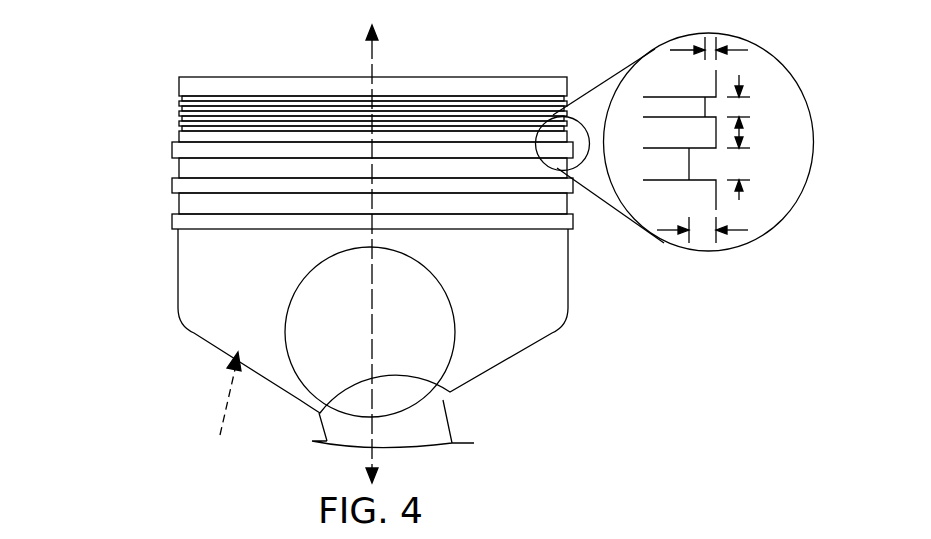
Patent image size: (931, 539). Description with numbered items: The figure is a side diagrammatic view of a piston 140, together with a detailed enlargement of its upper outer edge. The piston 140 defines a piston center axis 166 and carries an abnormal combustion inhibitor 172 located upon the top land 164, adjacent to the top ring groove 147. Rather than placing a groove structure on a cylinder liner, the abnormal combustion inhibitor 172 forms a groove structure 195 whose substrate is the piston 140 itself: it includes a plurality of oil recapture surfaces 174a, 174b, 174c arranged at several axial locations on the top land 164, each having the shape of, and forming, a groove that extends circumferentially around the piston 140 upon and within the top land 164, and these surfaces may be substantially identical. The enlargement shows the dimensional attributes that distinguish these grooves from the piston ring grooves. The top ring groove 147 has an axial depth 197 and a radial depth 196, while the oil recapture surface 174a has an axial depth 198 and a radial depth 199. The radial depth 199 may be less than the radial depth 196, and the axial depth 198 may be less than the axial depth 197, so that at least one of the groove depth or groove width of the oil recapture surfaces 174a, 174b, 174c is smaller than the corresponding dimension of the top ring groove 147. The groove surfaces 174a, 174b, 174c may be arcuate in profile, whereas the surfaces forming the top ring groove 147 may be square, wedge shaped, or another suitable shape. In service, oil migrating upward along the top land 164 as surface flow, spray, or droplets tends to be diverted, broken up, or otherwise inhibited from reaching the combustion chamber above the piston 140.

The piston 140 is at (389, 243).
The top ring groove 147 is at (689, 170).
The top land 164 is at (566, 80).
The piston center axis 166 is at (373, 56).
The abnormal combustion inhibitor 172 is at (389, 98).
The oil recapture surface 174a is at (180, 131).
The oil recapture surface 174b is at (178, 112).
The oil recapture surface 174c is at (205, 94).
The groove structure 195 is at (288, 104).
The radial depth 196 is at (703, 234).
The axial depth 197 is at (743, 170).
The axial depth 198 is at (743, 106).
The radial depth 199 is at (710, 44).